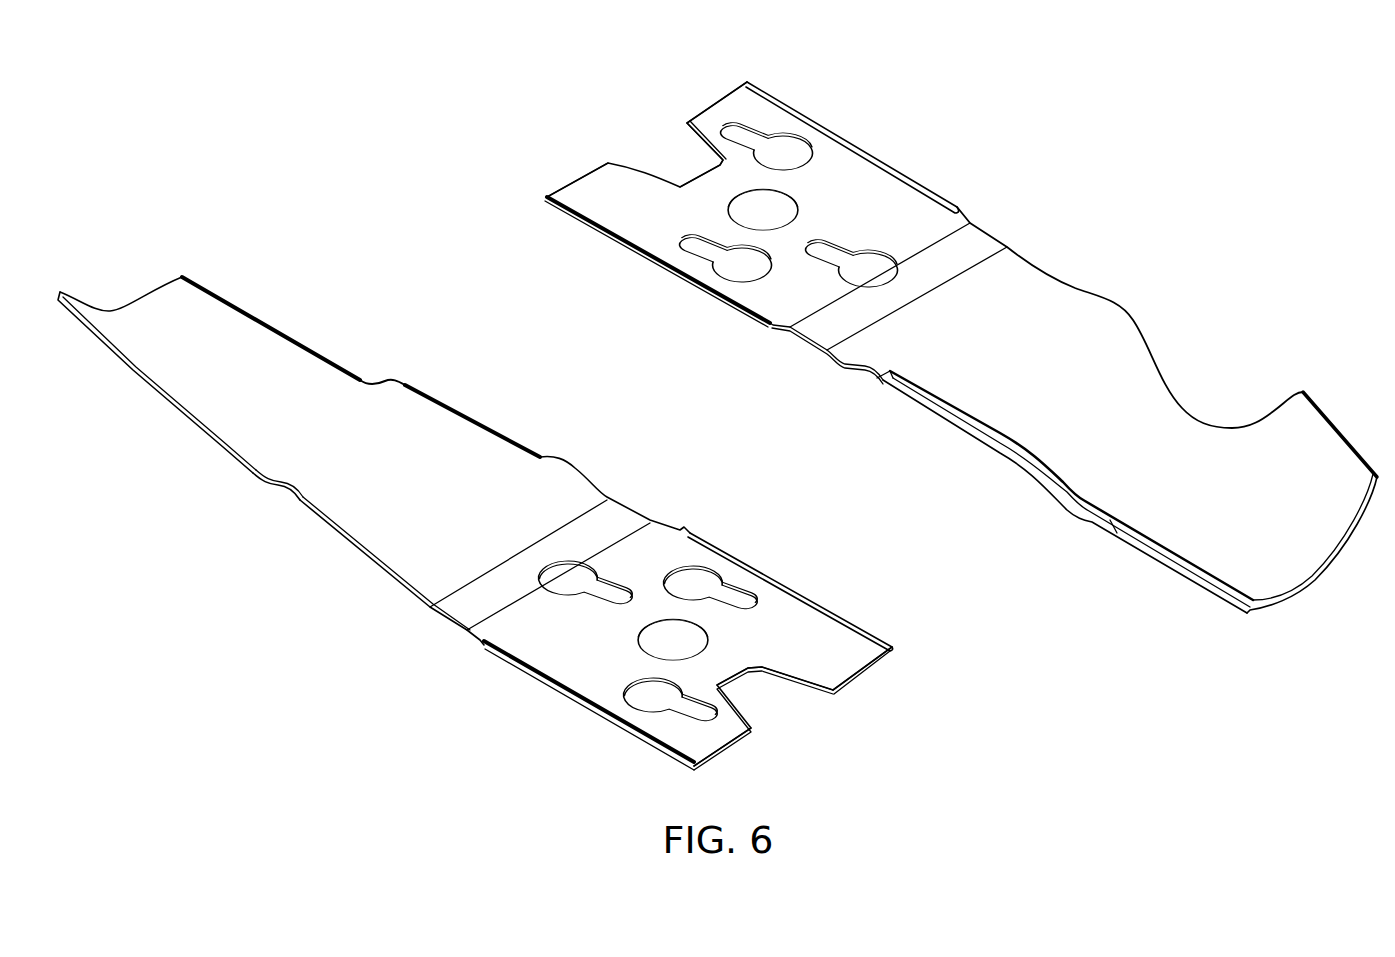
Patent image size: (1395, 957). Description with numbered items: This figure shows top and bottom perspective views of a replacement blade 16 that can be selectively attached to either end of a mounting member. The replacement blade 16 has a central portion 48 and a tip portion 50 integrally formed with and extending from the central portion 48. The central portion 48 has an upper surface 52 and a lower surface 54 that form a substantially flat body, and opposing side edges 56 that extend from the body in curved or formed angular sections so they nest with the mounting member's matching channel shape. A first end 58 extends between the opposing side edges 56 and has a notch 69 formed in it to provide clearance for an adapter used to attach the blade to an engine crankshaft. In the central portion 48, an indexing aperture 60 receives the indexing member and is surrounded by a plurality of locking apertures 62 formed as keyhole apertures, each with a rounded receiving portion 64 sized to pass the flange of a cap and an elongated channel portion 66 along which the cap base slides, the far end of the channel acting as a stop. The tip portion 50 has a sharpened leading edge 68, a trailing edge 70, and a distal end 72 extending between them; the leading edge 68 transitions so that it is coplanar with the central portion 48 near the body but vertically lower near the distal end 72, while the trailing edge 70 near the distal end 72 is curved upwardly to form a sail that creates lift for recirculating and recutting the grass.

The replacement blade 16 is at (724, 427).
The central portion 48 is at (721, 427).
The tip portion 50 is at (726, 429).
The upper surface 52 is at (844, 199).
The lower surface 54 is at (563, 220).
The opposing side edges 56 is at (812, 115).
The first end 58 is at (719, 101).
The indexing aperture 60 is at (728, 210).
The locking apertures 62 is at (726, 418).
The receiving portion 64 is at (764, 247).
The channel portion 66 is at (690, 236).
The leading edge 68 is at (452, 405).
The notch 69 is at (690, 143).
The trailing edge 70 is at (226, 447).
The distal end 72 is at (155, 290).